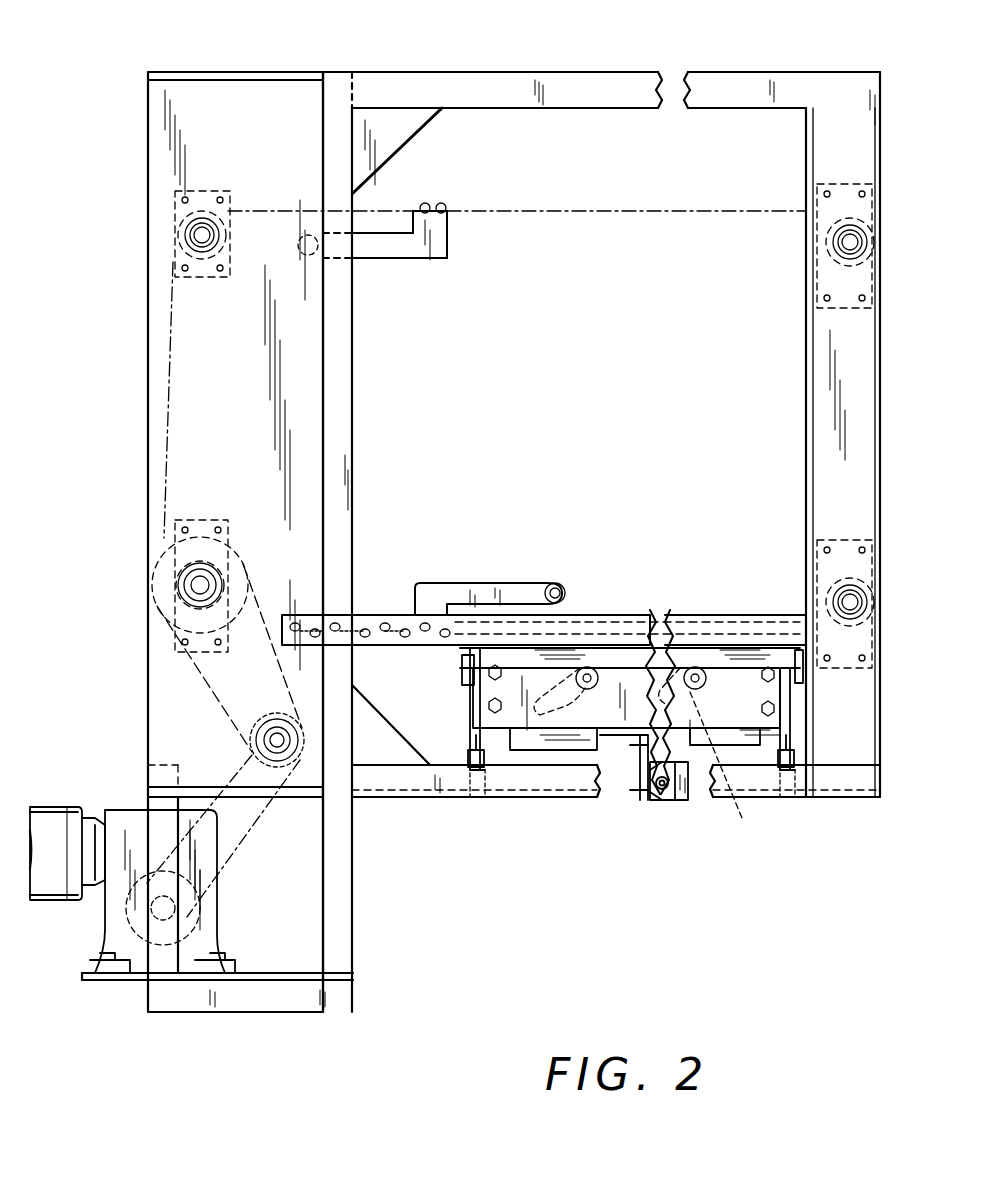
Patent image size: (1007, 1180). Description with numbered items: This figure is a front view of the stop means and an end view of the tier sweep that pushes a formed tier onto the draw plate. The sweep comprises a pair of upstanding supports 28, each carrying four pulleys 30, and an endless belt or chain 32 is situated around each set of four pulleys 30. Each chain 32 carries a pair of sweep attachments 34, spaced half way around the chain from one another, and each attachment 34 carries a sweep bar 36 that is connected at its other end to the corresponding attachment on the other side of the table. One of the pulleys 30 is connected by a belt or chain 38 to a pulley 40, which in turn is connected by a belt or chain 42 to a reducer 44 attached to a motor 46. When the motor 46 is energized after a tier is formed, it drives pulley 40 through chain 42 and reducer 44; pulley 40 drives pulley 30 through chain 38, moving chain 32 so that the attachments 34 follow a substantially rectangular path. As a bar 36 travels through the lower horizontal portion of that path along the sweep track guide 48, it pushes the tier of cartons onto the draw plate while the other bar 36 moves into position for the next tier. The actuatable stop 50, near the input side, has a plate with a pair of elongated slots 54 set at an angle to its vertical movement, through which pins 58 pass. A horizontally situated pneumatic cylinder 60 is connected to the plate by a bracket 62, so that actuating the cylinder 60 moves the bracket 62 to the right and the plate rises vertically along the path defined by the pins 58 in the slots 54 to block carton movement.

The upstanding support 28 is at (210, 120).
The pulley 30 is at (175, 225).
The endless belt or chain 32 is at (508, 212).
The sweep attachment 34 is at (432, 245).
The sweep bar 36 is at (304, 256).
The belt or chain 38 is at (262, 648).
The pulley 40 is at (283, 740).
The belt or chain 42 is at (237, 830).
The reducer 44 is at (205, 935).
The motor 46 is at (52, 812).
The sweep track guide 48 is at (688, 616).
The actuatable stop 50 is at (565, 720).
The elongated slot 54 is at (570, 715).
The pin 58 is at (597, 678).
The pneumatic cylinder 60 is at (770, 800).
The bracket 62 is at (632, 753).